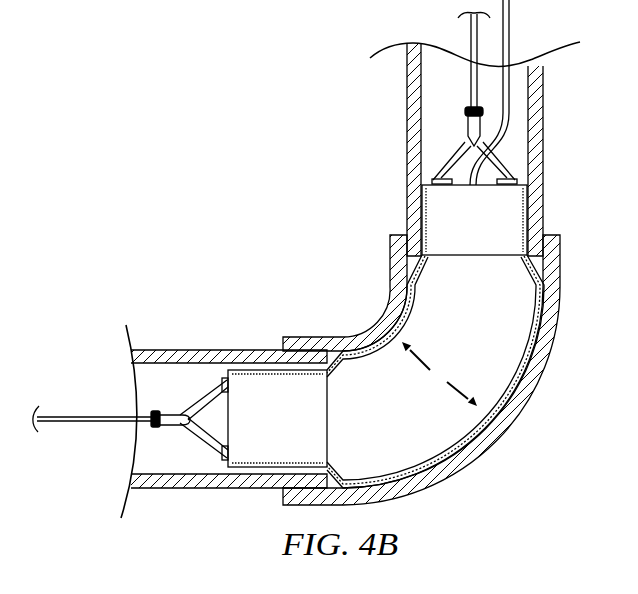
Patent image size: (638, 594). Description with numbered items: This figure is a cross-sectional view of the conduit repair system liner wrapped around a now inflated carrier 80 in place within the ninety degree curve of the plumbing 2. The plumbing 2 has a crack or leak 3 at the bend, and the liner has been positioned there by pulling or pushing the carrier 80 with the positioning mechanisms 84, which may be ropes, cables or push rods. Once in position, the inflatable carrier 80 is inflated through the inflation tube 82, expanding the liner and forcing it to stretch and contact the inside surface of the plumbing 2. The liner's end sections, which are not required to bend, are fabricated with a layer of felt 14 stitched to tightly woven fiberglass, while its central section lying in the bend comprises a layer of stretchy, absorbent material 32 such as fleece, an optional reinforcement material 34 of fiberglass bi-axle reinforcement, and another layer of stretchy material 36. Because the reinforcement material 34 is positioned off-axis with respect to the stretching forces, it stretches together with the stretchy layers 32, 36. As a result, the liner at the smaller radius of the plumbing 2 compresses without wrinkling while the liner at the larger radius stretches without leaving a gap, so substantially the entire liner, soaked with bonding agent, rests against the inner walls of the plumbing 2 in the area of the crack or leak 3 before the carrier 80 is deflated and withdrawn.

The plumbing 2 is at (442, 465).
The crack or leak 3 is at (510, 437).
The layer of felt 14 is at (522, 208).
The stretchy, absorbent material 32 is at (388, 312).
The reinforcement material 34 is at (374, 354).
The stretchy material 36 is at (410, 317).
The carrier 80 is at (225, 422).
The inflation tube 82 is at (508, 25).
The positioning mechanisms 84 is at (471, 33).